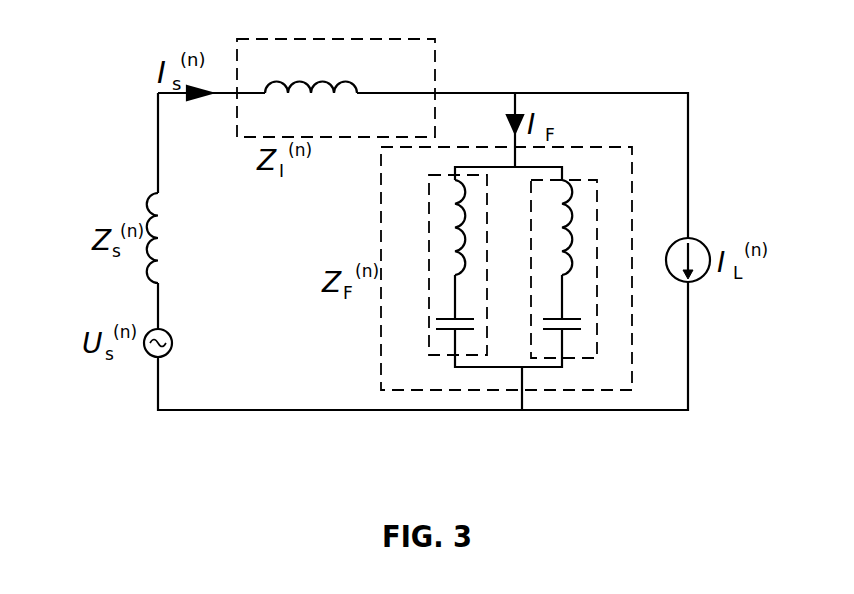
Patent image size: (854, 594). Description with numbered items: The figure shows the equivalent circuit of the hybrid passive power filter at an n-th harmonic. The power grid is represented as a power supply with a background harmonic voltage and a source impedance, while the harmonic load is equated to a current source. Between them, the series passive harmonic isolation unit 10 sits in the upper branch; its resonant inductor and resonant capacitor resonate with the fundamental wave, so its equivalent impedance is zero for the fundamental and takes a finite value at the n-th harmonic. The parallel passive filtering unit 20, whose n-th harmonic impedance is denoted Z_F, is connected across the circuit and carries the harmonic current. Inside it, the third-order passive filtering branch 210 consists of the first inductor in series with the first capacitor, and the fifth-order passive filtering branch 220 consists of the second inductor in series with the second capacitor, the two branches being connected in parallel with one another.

The series passive harmonic isolation unit 10 is at (437, 41).
The parallel passive filtering unit 20 is at (493, 241).
The third-order passive filtering branch 210 is at (427, 197).
The fifth-order passive filtering branch 220 is at (597, 178).